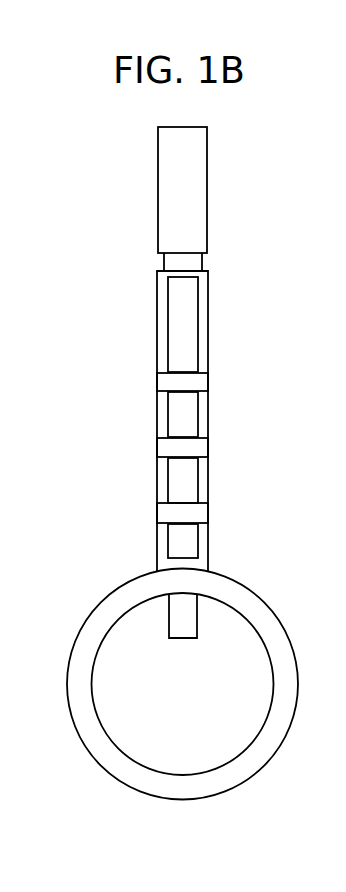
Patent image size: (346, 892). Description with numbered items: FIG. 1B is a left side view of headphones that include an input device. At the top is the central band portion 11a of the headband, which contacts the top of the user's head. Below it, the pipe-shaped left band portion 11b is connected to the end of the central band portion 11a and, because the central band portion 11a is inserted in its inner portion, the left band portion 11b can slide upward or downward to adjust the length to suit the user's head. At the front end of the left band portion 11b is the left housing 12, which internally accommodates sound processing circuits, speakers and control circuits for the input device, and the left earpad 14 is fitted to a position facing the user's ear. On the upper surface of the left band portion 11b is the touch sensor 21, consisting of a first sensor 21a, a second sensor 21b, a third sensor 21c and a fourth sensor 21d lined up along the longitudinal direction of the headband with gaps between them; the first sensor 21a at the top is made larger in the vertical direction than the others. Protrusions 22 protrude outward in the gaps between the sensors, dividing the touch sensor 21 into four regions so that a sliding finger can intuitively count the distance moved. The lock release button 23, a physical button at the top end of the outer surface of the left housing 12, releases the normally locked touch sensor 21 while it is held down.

The central band portion 11a is at (158, 226).
The left band portion 11b is at (157, 320).
The touch sensor 21 is at (249, 417).
The first sensor 21a is at (199, 339).
The second sensor 21b is at (199, 414).
The third sensor 21c is at (199, 480).
The fourth sensor 21d is at (220, 540).
The protrusion 22 is at (157, 382).
The lock release button 23 is at (168, 615).
The left earpad 14 is at (67, 690).
The left housing 12 is at (108, 735).